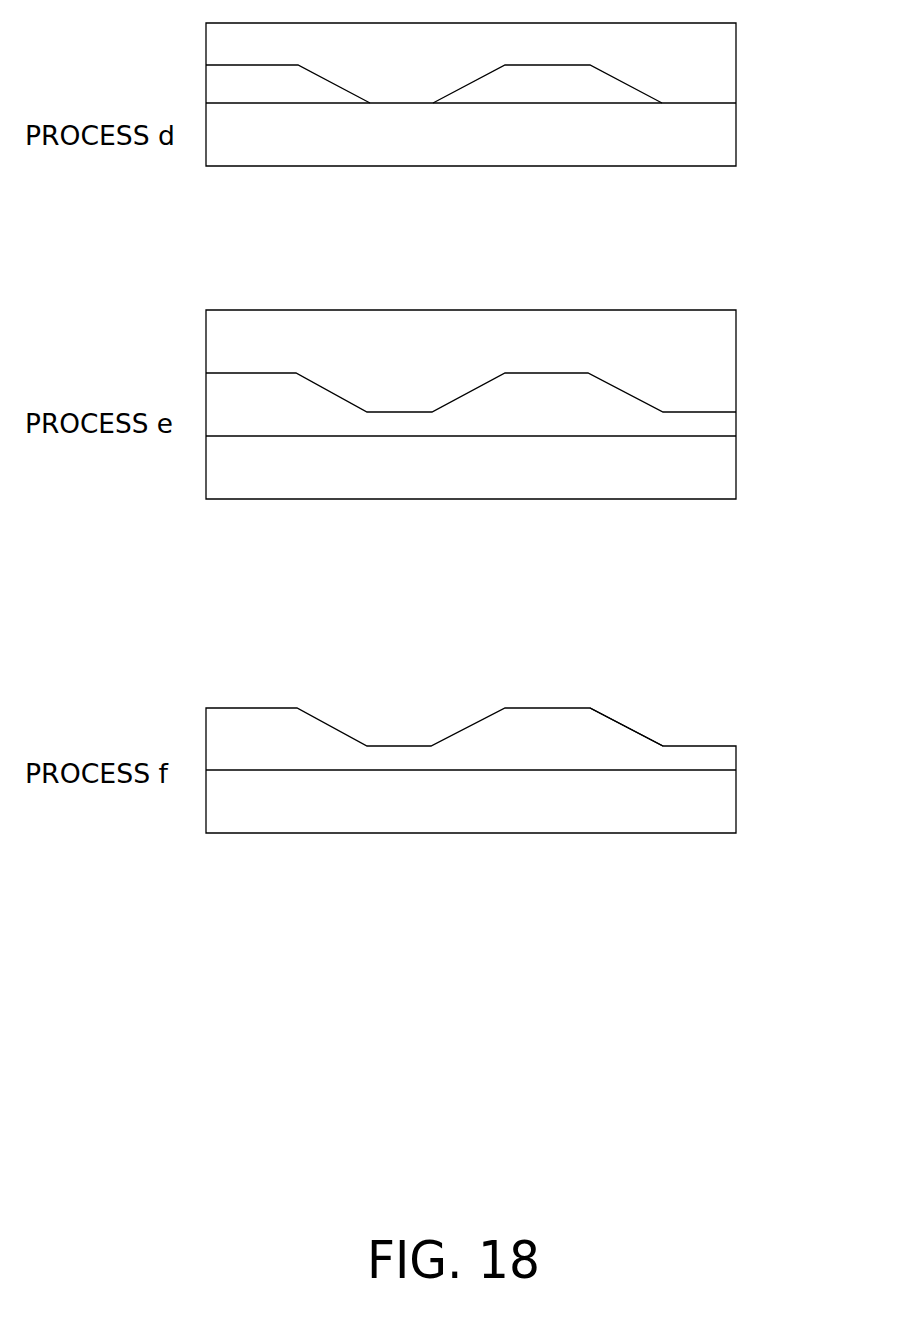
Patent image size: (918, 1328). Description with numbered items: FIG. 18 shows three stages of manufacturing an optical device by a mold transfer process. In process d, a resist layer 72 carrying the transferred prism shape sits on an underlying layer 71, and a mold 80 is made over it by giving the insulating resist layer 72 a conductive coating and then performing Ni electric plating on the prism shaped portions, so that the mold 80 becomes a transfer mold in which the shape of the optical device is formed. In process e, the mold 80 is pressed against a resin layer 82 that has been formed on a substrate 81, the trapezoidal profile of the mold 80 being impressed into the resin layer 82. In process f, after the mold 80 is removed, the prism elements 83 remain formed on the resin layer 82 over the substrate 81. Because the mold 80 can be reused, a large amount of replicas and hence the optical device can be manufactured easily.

The substrate 71 is at (728, 139).
The resist layer 72 is at (646, 80).
The mold 80 is at (728, 32).
The substrate 81 is at (728, 470).
The resin layer 82 is at (728, 420).
The prism elements 83 is at (623, 725).